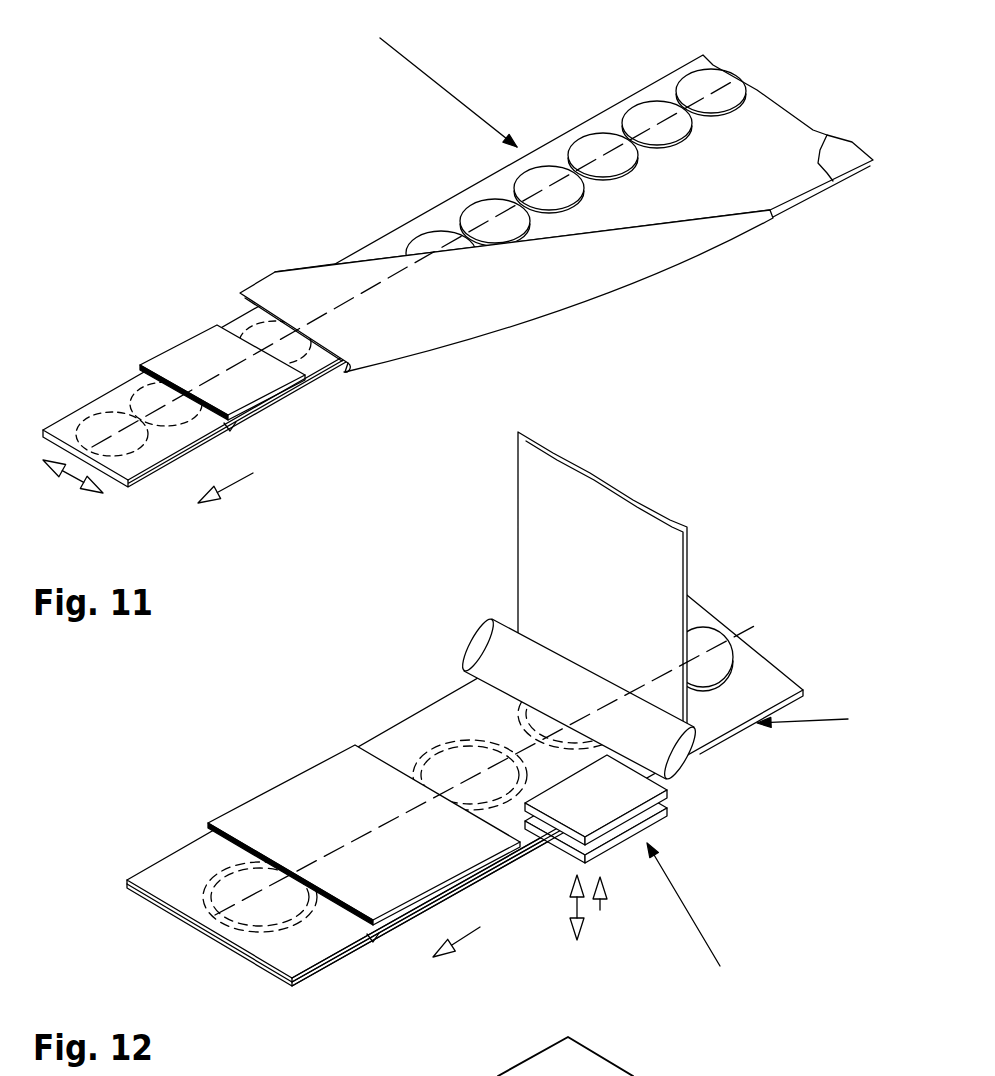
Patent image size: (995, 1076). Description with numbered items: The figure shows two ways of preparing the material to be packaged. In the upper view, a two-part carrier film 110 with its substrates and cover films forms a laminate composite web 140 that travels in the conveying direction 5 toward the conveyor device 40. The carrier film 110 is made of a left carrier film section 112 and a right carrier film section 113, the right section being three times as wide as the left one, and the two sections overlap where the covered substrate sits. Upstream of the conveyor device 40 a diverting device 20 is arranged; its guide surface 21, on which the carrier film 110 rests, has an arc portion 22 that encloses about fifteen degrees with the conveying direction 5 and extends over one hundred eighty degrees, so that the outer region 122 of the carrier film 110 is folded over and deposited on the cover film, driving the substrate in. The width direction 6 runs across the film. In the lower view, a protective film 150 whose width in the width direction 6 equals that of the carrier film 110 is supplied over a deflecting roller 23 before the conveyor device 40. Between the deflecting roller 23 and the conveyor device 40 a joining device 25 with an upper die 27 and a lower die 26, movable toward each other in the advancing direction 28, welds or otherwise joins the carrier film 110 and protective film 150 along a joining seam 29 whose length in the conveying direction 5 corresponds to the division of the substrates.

In FIG. 11, the conveying direction 5 is at (227, 488).
In FIG. 12, the conveying direction 5 is at (457, 940).
In FIG. 11, the width direction 6 is at (73, 477).
In FIG. 11, the diverting device 20 is at (555, 268).
In FIG. 11, the guide surface 21 is at (840, 153).
In FIG. 11, the arc portion 22 is at (346, 367).
In FIG. 12, the deflecting roller 23 is at (640, 717).
In FIG. 12, the joining device 25 is at (694, 918).
In FIG. 12, the lower die 26 is at (627, 832).
In FIG. 12, the upper die 27 is at (648, 803).
In FIG. 12, the advancing direction 28 is at (600, 910).
In FIG. 12, the joining seam 29 is at (540, 836).
In FIG. 11, the conveyor device 40 is at (198, 345).
In FIG. 12, the conveyor device 40 is at (330, 772).
In FIG. 11, the carrier film 110 is at (425, 222).
In FIG. 12, the carrier film 110 is at (743, 702).
In FIG. 11, the left carrier film section 112 is at (603, 127).
In FIG. 12, the left carrier film section 112 is at (150, 898).
In FIG. 11, the right carrier film section 113 is at (722, 150).
In FIG. 12, the right carrier film section 113 is at (250, 957).
In FIG. 11, the outer region of the carrier film 122 is at (728, 177).
In FIG. 11, the laminate composite web 140 is at (430, 76).
In FIG. 12, the laminate composite web 140 is at (824, 718).
In FIG. 12, the protective film 150 is at (687, 560).